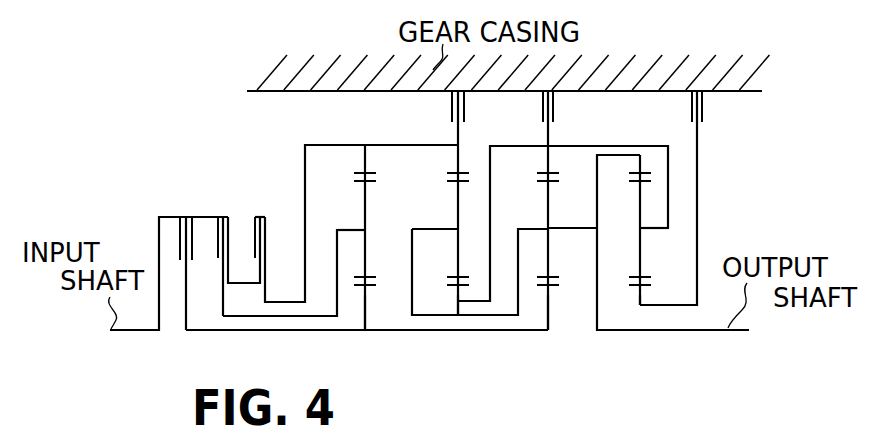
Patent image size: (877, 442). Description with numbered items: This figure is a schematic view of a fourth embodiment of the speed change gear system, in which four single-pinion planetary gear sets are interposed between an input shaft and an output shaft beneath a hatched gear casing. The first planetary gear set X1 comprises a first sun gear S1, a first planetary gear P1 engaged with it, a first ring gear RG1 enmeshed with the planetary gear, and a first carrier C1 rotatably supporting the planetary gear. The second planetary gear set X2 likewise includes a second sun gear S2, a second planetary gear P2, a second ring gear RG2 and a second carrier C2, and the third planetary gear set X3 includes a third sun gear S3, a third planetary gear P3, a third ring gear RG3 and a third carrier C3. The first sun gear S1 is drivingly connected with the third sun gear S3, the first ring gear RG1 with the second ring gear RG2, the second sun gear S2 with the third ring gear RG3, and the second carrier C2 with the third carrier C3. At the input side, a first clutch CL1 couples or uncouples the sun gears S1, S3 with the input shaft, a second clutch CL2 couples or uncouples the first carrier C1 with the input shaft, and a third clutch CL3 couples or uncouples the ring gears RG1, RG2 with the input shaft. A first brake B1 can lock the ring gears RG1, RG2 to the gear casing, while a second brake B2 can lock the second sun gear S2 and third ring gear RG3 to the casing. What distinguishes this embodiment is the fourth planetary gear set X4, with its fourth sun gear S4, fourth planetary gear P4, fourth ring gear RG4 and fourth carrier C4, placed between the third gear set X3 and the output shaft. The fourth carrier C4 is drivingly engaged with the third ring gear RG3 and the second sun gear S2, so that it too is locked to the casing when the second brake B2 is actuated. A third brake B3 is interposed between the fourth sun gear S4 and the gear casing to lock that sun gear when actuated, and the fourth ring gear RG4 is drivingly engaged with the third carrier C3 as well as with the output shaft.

The first clutch CL1 is at (196, 224).
The second clutch CL2 is at (234, 224).
The third clutch CL3 is at (270, 224).
The first brake B1 is at (450, 104).
The second brake B2 is at (541, 102).
The third brake B3 is at (690, 102).
The first ring gear RG1 is at (367, 163).
The second ring gear RG2 is at (460, 156).
The third ring gear RG3 is at (551, 158).
The fourth ring gear RG4 is at (644, 164).
The first carrier C1 is at (368, 229).
The second carrier C2 is at (457, 229).
The third carrier C3 is at (551, 229).
The fourth carrier C4 is at (640, 229).
The first planetary gear P1 is at (367, 256).
The second planetary gear P2 is at (456, 250).
The third planetary gear P3 is at (549, 256).
The fourth planetary gear P4 is at (642, 257).
The first sun gear S1 is at (367, 306).
The second sun gear S2 is at (456, 294).
The third sun gear S3 is at (549, 311).
The fourth sun gear S4 is at (645, 298).
The first planetary gear set X1 is at (360, 318).
The second planetary gear set X2 is at (466, 300).
The third planetary gear set X3 is at (538, 310).
The fourth planetary gear set X4 is at (632, 310).